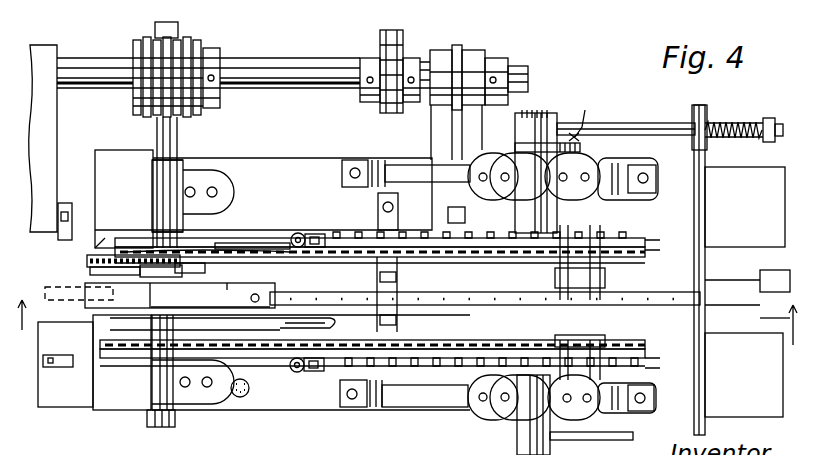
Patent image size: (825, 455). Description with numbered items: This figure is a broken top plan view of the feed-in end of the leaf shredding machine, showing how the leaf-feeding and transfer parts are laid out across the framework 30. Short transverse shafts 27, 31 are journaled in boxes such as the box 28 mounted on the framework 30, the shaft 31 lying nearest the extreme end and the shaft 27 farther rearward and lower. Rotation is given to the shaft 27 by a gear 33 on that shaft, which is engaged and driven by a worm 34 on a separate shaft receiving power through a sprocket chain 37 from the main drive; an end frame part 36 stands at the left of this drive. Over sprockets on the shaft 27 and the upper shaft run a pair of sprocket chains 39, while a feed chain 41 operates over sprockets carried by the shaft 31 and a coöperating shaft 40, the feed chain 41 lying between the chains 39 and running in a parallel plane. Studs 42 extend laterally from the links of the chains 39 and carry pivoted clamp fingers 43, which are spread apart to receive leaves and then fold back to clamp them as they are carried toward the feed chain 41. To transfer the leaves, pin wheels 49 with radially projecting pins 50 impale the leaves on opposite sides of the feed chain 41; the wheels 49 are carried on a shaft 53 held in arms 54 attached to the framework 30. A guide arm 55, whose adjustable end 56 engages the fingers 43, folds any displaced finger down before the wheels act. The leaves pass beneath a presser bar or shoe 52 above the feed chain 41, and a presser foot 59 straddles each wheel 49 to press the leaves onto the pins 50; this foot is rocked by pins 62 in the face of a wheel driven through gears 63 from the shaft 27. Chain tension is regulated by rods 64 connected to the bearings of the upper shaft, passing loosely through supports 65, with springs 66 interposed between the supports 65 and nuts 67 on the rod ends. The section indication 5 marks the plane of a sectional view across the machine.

The section line 5- 5 is at (403, 315).
The shaft 27 is at (178, 135).
The box 28 is at (520, 160).
The framework 30 is at (335, 410).
The shaft 31 is at (583, 110).
The gear 33 is at (258, 52).
The worm 34 is at (133, 45).
The frame wall 36 is at (45, 116).
The sprocket chain 37 is at (380, 40).
The sprocket chains 39 is at (595, 353).
The coöperating shaft 40 is at (190, 311).
The feed chain 41 is at (426, 299).
The fingers or studs 42 is at (360, 232).
The clamp fingers 43 is at (635, 240).
The wheels 49 is at (236, 290).
The pins 50 is at (330, 280).
The presser bar or shoe 52 is at (130, 308).
The shaft 53 is at (260, 372).
The arms 54 is at (225, 245).
The guide arm 55 is at (272, 230).
The end of guide arm 56 is at (316, 232).
The presser foot 59 is at (322, 322).
The pins 62 is at (90, 271).
The gears 63 is at (98, 248).
The rods 64 is at (645, 123).
The supports 65 is at (694, 150).
The springs 66 is at (730, 120).
The nuts 67 is at (768, 143).